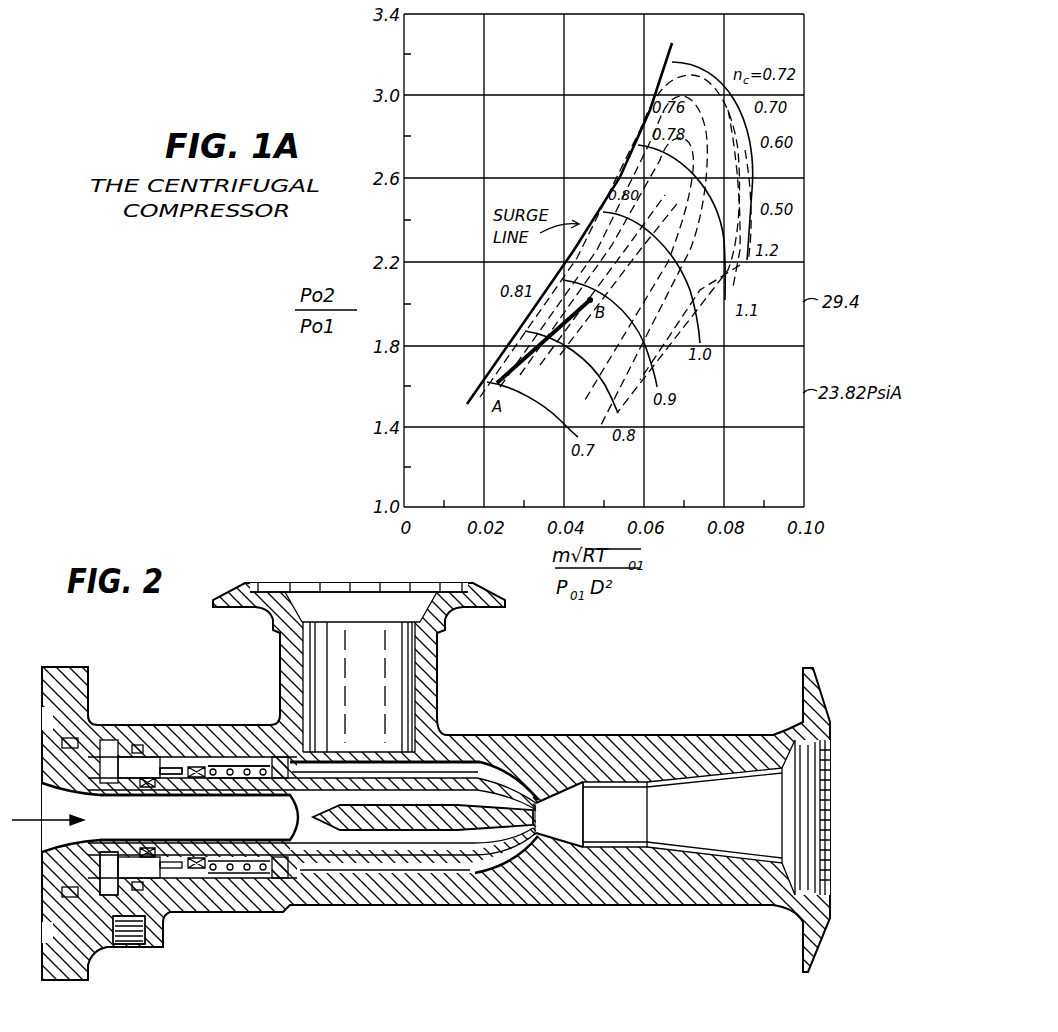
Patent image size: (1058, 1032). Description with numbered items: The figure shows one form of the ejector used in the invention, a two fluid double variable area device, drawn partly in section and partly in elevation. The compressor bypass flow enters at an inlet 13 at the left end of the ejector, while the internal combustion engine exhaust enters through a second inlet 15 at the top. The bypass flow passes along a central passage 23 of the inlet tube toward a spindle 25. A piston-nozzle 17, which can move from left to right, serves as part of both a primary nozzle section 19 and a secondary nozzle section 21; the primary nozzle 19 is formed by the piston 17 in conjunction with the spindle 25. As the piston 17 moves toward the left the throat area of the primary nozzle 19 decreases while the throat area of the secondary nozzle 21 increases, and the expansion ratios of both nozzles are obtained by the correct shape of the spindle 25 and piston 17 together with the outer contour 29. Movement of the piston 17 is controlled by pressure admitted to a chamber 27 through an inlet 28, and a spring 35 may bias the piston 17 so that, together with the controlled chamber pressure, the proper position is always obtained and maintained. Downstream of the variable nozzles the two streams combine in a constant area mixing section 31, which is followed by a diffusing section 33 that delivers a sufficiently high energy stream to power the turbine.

The inlet 13 is at (28, 816).
The inlet 15 is at (362, 566).
The piston-nozzle 17 is at (173, 768).
The primary nozzle section 19 is at (578, 847).
The secondary nozzle section 21 is at (538, 792).
The primary passage 23 is at (223, 793).
The spindle 25 is at (487, 835).
The chamber 27 is at (117, 868).
The inlet 28 is at (128, 942).
The outer contour 29 is at (531, 836).
The constant area mixing section 31 is at (622, 836).
The diffusing section 33 is at (724, 836).
The spring 35 is at (242, 769).